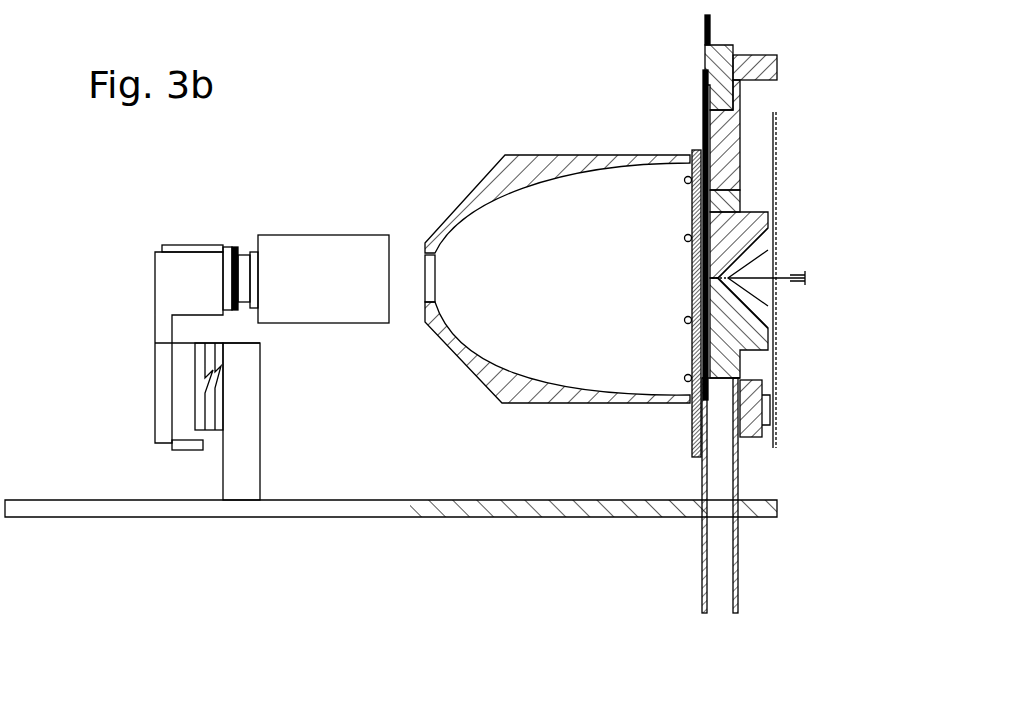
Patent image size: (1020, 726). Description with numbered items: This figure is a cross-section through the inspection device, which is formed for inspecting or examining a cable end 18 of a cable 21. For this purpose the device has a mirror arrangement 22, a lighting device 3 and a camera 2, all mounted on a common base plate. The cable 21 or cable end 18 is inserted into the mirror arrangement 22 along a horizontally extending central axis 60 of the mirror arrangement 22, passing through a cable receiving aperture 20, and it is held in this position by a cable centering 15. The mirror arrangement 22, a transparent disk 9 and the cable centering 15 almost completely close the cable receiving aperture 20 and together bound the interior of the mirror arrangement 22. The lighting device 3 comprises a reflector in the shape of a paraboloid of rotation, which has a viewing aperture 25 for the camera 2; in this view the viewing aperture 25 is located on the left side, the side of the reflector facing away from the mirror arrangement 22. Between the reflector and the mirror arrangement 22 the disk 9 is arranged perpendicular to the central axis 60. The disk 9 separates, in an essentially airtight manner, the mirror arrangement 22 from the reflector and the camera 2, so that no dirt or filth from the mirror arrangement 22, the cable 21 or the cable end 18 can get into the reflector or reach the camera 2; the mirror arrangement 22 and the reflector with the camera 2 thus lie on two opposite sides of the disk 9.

The camera 2 is at (158, 260).
The lighting device 3 is at (553, 457).
The viewing aperture 25 is at (429, 287).
The disk 9 is at (696, 158).
The central axis 60 is at (713, 277).
The cable end 18 is at (739, 274).
The cable 21 is at (795, 274).
The cable receiving aperture 20 is at (790, 304).
The cable centering 15 is at (770, 410).
The mirror arrangement 22 is at (780, 619).